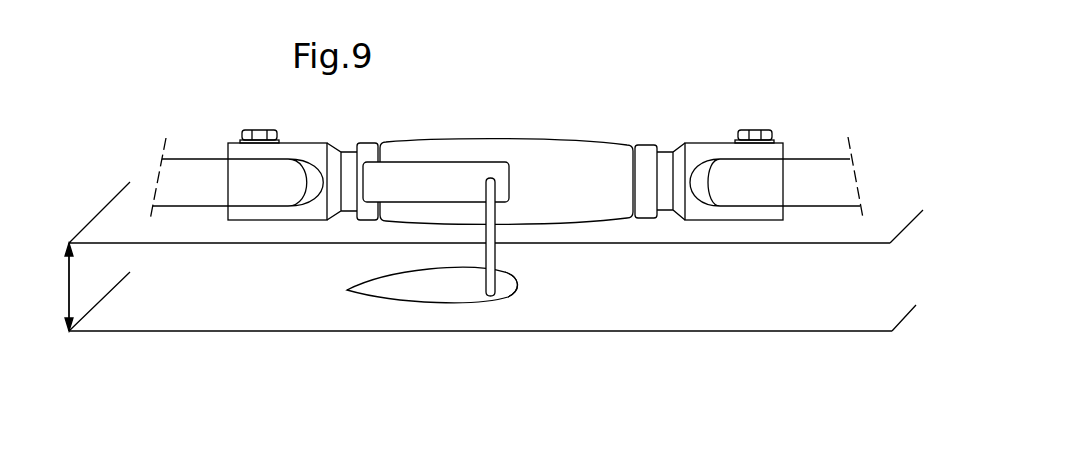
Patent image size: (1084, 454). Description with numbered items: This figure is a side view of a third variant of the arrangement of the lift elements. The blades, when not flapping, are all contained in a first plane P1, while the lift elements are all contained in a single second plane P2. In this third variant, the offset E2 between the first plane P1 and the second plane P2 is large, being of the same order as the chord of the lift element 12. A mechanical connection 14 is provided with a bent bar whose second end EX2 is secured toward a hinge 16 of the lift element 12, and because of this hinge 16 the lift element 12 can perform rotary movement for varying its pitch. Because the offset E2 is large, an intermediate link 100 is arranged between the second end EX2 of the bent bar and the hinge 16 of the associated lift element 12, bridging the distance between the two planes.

The first plane P1 is at (92, 216).
The second plane P2 is at (105, 332).
The offset E2 is at (70, 272).
The second end EX2 is at (490, 157).
The mechanical connection 14 is at (425, 171).
The intermediate link 100 is at (490, 253).
The lift element 12 is at (430, 290).
The hinge 16 is at (515, 285).